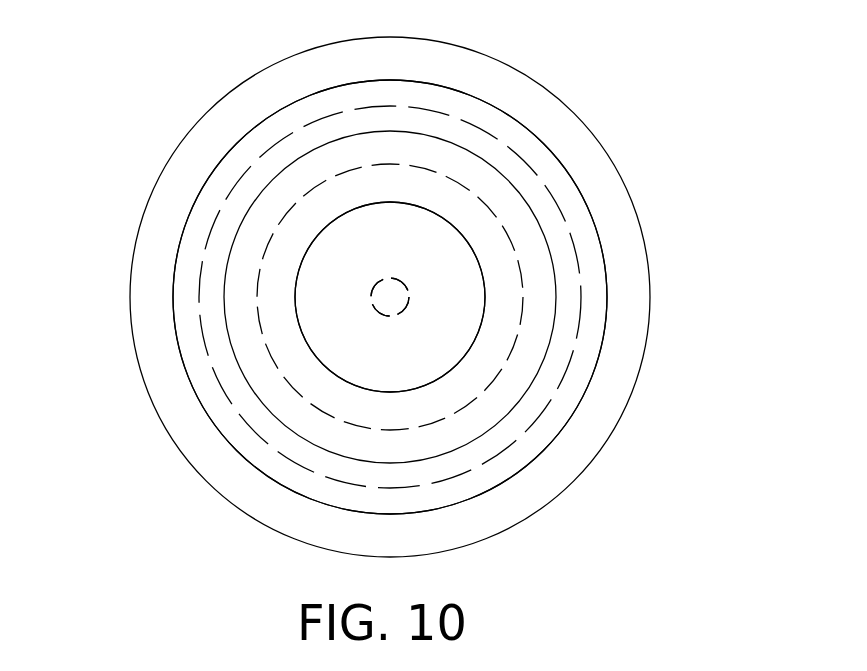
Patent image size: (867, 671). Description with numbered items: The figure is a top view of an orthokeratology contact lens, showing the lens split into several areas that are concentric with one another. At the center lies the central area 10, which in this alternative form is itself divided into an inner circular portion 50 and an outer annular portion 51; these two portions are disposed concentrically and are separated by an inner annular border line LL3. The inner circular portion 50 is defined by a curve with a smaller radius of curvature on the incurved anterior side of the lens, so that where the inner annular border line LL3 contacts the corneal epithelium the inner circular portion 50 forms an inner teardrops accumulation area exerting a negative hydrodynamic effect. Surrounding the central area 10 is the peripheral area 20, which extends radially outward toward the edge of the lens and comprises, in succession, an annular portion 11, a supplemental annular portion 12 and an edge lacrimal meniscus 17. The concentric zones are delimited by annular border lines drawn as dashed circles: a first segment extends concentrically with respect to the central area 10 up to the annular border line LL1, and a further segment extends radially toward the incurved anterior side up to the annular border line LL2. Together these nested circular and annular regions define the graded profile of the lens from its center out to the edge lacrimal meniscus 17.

The central area 10 is at (350, 247).
The annular portion 11 is at (473, 367).
The supplemental annular portion 12 is at (547, 172).
The edge lacrimal meniscus 17 is at (153, 248).
The peripheral area 20 is at (344, 297).
The inner circular portion 50 is at (393, 298).
The outer annular portion 51 is at (415, 258).
The annular border line LL1 is at (305, 397).
The annular border line LL2 is at (573, 240).
The inner annular border line LL3 is at (402, 310).